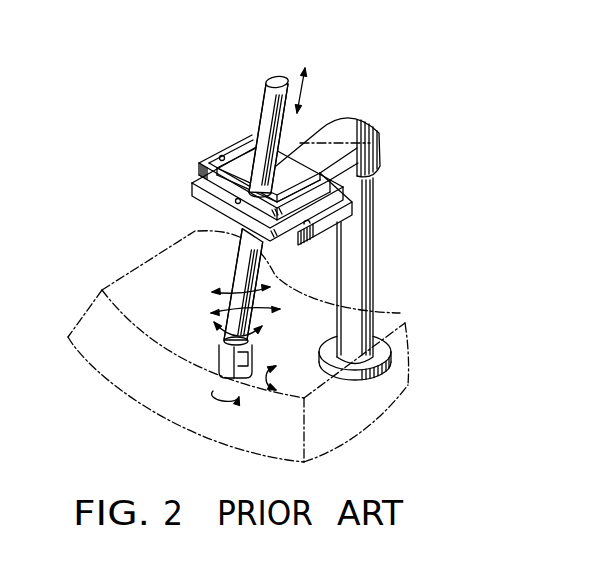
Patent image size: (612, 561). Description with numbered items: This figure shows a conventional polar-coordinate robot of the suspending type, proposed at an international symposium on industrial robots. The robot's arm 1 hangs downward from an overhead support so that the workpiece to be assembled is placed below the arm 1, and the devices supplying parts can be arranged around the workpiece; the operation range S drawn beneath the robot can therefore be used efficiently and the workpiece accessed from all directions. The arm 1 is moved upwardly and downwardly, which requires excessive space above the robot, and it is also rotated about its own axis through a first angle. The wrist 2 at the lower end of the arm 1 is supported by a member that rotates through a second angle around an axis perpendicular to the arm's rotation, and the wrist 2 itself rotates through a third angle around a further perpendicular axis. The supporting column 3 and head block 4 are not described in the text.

The arm 1 is at (223, 123).
The wrist 2 is at (218, 349).
The column 3 is at (375, 232).
The arm / head block 4 is at (368, 131).
The operation range S is at (153, 275).